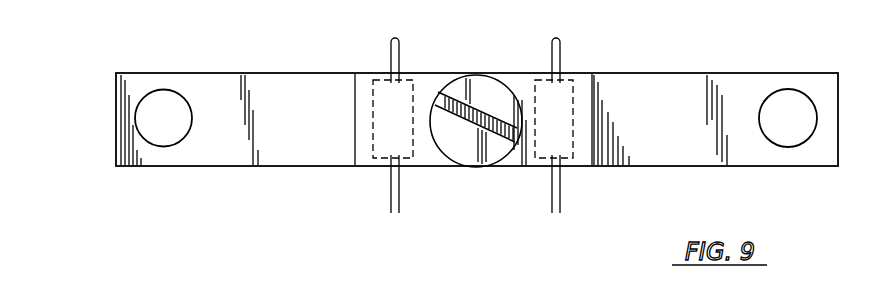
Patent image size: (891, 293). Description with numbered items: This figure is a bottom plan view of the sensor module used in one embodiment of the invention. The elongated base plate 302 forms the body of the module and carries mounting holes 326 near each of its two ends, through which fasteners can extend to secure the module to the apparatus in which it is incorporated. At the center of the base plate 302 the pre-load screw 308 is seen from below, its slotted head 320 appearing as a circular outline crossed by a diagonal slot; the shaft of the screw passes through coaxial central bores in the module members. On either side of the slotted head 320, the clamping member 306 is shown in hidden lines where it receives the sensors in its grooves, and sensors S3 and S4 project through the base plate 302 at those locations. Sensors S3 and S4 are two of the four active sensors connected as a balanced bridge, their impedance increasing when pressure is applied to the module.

The base plate 302 is at (653, 73).
The clamping member 306 is at (426, 88).
The pre-load screw 308 is at (490, 84).
The slotted head 320 is at (470, 163).
The mounting holes 326 is at (170, 107).
The sensor S3 is at (390, 192).
The sensor S4 is at (561, 183).